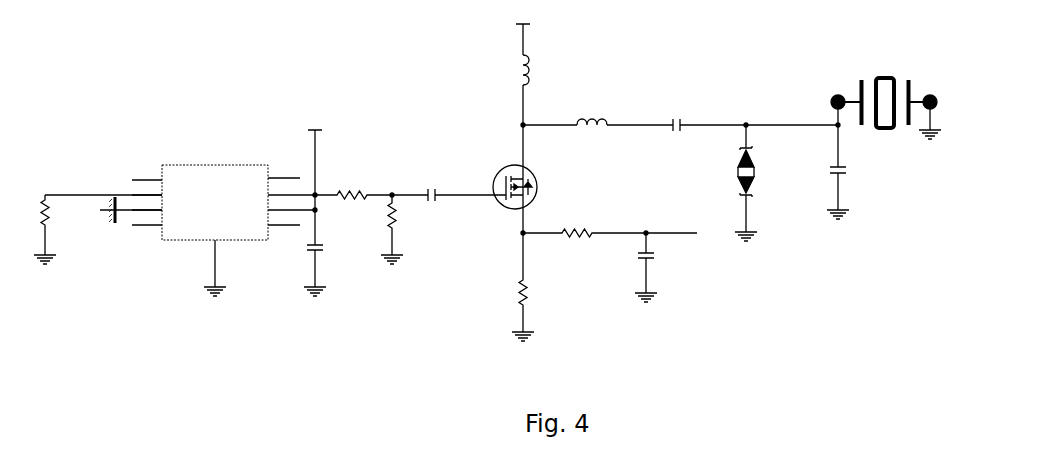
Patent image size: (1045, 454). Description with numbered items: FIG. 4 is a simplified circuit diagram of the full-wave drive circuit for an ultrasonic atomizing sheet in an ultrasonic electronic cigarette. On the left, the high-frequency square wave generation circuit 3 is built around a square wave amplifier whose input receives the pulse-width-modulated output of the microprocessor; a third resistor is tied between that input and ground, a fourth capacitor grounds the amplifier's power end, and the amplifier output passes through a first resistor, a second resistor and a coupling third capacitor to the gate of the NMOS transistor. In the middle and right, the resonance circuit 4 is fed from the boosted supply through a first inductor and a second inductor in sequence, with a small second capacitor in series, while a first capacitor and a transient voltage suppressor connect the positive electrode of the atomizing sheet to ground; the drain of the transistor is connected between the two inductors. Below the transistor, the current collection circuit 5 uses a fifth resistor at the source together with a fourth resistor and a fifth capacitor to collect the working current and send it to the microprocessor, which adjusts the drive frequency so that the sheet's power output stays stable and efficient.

The high-frequency square wave generation circuit 3 is at (210, 121).
The resonance circuit 4 is at (716, 70).
The current collection circuit 5 is at (502, 281).